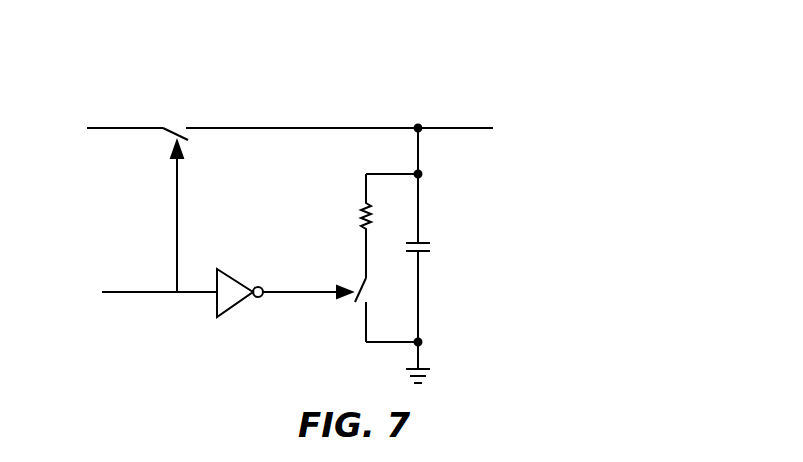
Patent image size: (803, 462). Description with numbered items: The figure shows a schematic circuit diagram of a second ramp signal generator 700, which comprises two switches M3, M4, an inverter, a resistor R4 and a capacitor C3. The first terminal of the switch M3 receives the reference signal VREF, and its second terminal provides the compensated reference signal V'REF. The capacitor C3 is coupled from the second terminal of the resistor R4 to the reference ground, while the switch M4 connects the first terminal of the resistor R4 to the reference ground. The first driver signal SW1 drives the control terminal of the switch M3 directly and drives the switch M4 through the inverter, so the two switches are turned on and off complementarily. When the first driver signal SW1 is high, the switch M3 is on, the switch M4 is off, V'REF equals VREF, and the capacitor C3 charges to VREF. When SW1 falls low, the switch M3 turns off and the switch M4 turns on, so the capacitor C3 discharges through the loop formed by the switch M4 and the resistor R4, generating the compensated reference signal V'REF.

The second ramp signal generator 700 is at (567, 73).
The switch M3 is at (328, 197).
The switch M4 is at (392, 330).
The resistor R4 is at (377, 225).
The capacitor C3 is at (432, 291).
The first driver signal SW1 is at (202, 293).
The reference signal VREF is at (109, 114).
The compensated reference signal V'REF is at (466, 168).